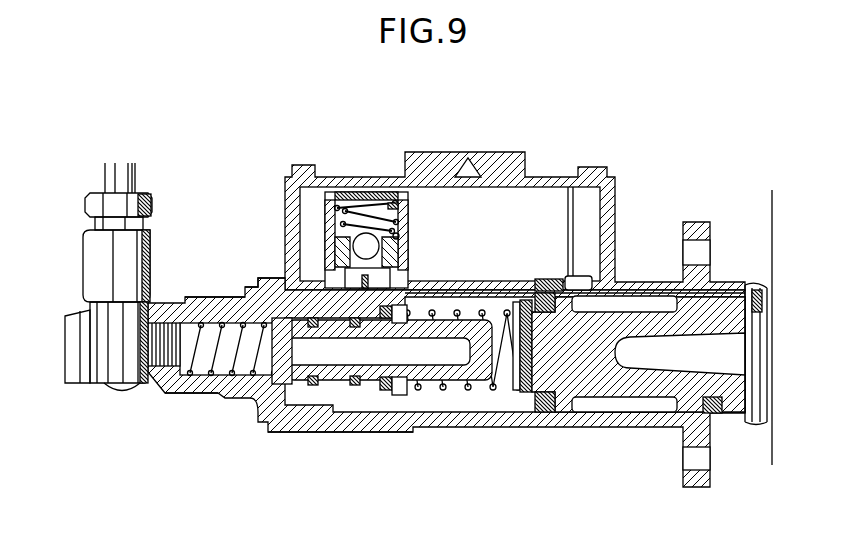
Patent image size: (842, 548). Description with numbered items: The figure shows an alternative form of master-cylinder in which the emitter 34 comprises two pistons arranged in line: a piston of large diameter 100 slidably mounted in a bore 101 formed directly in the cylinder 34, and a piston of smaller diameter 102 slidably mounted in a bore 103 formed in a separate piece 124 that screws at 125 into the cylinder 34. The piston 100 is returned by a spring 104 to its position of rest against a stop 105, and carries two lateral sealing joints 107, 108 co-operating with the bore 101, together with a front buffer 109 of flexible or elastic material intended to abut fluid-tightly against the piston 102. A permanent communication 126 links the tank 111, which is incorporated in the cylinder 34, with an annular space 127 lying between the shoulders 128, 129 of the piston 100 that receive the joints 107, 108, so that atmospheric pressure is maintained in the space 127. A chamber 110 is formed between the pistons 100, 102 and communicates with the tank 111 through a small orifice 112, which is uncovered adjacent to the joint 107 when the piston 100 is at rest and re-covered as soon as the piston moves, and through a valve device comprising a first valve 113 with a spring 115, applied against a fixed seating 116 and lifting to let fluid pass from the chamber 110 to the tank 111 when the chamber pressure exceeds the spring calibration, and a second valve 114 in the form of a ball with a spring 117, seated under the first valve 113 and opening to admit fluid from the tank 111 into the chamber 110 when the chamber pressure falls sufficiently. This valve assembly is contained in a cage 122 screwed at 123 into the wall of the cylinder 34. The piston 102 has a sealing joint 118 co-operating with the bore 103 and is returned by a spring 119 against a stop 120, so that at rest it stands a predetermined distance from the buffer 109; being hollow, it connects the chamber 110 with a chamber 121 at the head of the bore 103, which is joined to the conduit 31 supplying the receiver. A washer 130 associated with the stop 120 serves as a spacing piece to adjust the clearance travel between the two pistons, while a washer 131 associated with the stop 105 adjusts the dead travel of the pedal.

The conduit 31 is at (135, 180).
The emitter (cylinder) 34 is at (334, 445).
The piston of large diameter 100 is at (618, 392).
The bore 101 is at (430, 410).
The piston of smaller diameter 102 is at (288, 407).
The bore 103 is at (245, 378).
The spring 104 is at (487, 392).
The stop 105 is at (759, 288).
The lateral sealing joint 107 is at (547, 405).
The lateral sealing joint 108 is at (720, 416).
The front buffer 109 is at (510, 347).
The chamber 110 is at (485, 405).
The tank 111 is at (543, 196).
The small orifice 112 is at (537, 284).
The first valve 113 is at (335, 229).
The second valve (ball) 114 is at (353, 247).
The spring 115 is at (393, 211).
The seating 116 is at (400, 245).
The spring 117 is at (400, 258).
The sealing joint 118 is at (330, 408).
The spring 119 is at (197, 318).
The stop 120 is at (402, 393).
The chamber 121 is at (203, 373).
The cage 122 is at (333, 206).
The screw connection 123 is at (393, 274).
The piece 124 is at (203, 378).
The screw connection 125 is at (262, 289).
The permanent communication 126 is at (580, 278).
The annular space 127 is at (640, 300).
The shoulder 128 is at (558, 410).
The shoulder 129 is at (685, 410).
The washer 130 is at (388, 392).
The washer 131 is at (745, 290).